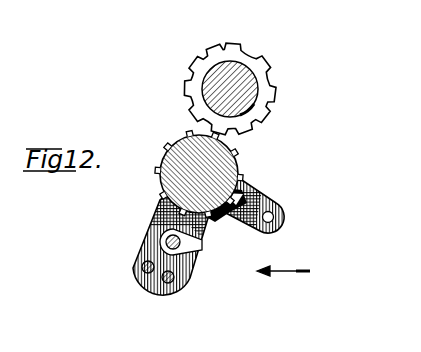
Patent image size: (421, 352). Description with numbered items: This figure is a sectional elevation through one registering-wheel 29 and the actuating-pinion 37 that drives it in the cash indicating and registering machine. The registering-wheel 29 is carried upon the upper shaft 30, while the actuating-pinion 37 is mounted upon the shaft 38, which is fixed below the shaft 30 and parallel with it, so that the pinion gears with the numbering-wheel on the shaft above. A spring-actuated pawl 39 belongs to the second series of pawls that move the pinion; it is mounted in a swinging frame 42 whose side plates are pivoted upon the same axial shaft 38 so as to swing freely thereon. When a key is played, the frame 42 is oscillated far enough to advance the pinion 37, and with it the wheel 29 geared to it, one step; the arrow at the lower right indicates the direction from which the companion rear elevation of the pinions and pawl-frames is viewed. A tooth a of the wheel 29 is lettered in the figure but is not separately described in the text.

The registering-wheel 29 is at (236, 46).
The shaft 30 is at (243, 92).
The tooth a is at (186, 90).
The actuating-pinion 37 is at (166, 146).
The shaft 38 is at (222, 165).
The spring-actuated pawl 39 is at (205, 225).
The swinging frame 42 is at (143, 243).